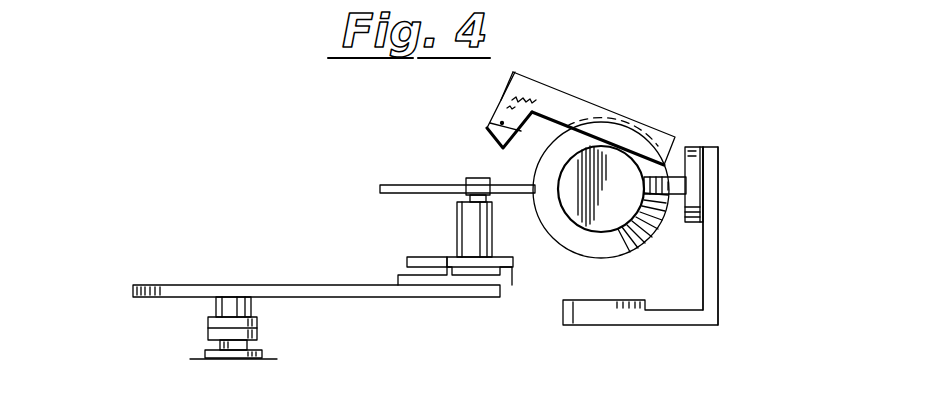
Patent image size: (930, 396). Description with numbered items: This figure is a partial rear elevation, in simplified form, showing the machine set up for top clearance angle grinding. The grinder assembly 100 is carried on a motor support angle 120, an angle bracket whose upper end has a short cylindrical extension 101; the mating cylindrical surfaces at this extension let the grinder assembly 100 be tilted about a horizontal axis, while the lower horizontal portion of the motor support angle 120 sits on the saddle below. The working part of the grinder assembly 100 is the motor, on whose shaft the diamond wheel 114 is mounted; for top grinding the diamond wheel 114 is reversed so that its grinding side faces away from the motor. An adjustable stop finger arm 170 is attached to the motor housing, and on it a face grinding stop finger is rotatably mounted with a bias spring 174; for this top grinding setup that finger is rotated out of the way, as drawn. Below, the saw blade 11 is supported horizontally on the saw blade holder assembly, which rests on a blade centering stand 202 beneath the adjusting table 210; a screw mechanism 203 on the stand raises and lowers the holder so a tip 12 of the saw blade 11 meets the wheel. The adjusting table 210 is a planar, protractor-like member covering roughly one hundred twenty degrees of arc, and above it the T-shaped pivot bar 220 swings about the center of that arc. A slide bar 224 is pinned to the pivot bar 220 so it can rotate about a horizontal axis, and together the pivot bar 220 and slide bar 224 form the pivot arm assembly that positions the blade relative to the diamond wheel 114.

The grinder assembly 100 is at (670, 100).
The cylindrical extension 101 is at (692, 148).
The diamond wheel 114 is at (645, 233).
The motor support angle 120 is at (713, 198).
The adjustable stop finger arm 170 is at (588, 100).
The bias spring 174 is at (507, 102).
The tip 12 is at (470, 178).
The saw blade 11 is at (405, 184).
The slide bar 224 is at (421, 257).
The pivot bar 220 is at (398, 278).
The adjusting table 210 is at (177, 285).
The blade centering stand 202 is at (186, 330).
The screw mechanism 203 is at (233, 342).